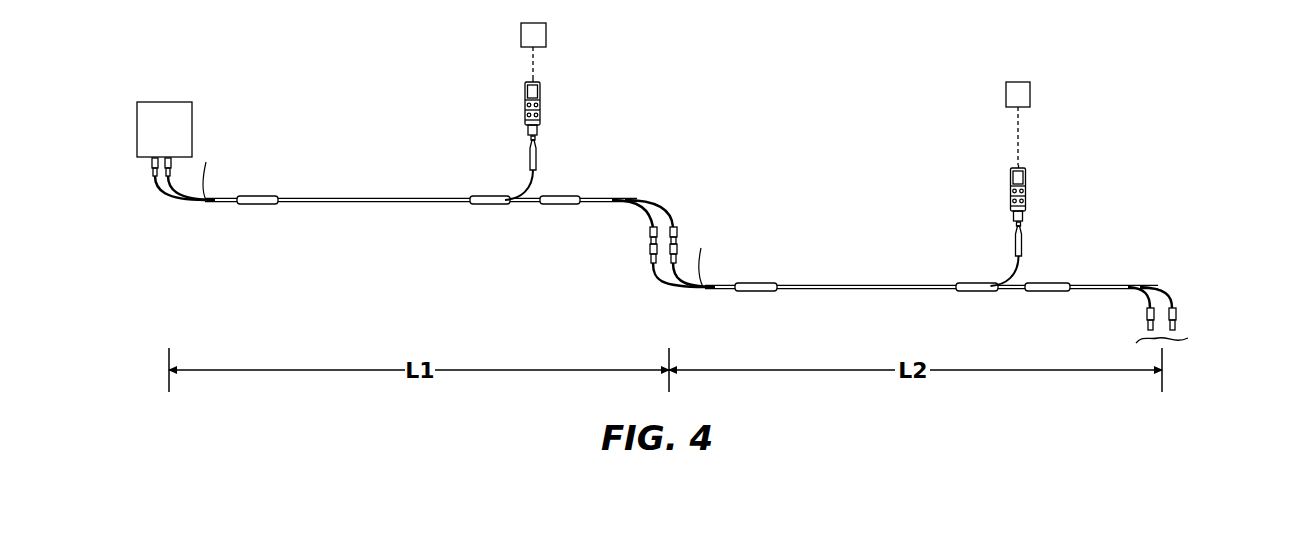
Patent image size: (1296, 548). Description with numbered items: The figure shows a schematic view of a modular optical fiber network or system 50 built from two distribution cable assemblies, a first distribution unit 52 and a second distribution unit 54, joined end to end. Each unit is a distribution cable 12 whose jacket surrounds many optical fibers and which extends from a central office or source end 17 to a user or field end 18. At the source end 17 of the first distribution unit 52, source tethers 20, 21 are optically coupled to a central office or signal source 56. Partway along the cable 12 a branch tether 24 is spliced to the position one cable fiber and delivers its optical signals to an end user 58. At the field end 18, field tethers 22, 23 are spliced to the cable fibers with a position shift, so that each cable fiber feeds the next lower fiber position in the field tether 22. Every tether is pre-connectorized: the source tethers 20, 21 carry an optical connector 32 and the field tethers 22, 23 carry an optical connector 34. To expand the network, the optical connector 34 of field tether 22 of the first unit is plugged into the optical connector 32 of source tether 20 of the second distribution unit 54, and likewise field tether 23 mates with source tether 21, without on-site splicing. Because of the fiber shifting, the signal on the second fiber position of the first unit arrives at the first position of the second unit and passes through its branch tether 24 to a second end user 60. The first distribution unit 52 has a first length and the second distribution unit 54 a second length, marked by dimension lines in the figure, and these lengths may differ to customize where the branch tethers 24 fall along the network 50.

The cable 12 is at (378, 197).
The source end 17 is at (122, 48).
The field end 18 is at (1251, 136).
The source tether 20 is at (170, 183).
The source tether 21 is at (160, 196).
The field tether 22 is at (665, 207).
The field tether 23 is at (645, 215).
The branch tether 24 is at (538, 173).
The optical connector 32 is at (664, 256).
The optical connector 34 is at (680, 238).
The modular optical fiber network 50 is at (1183, 98).
The first distribution unit 52 is at (362, 66).
The second distribution unit 54 is at (966, 159).
The signal source 56 is at (192, 125).
The end user 58 is at (546, 30).
The second end user 60 is at (1030, 93).